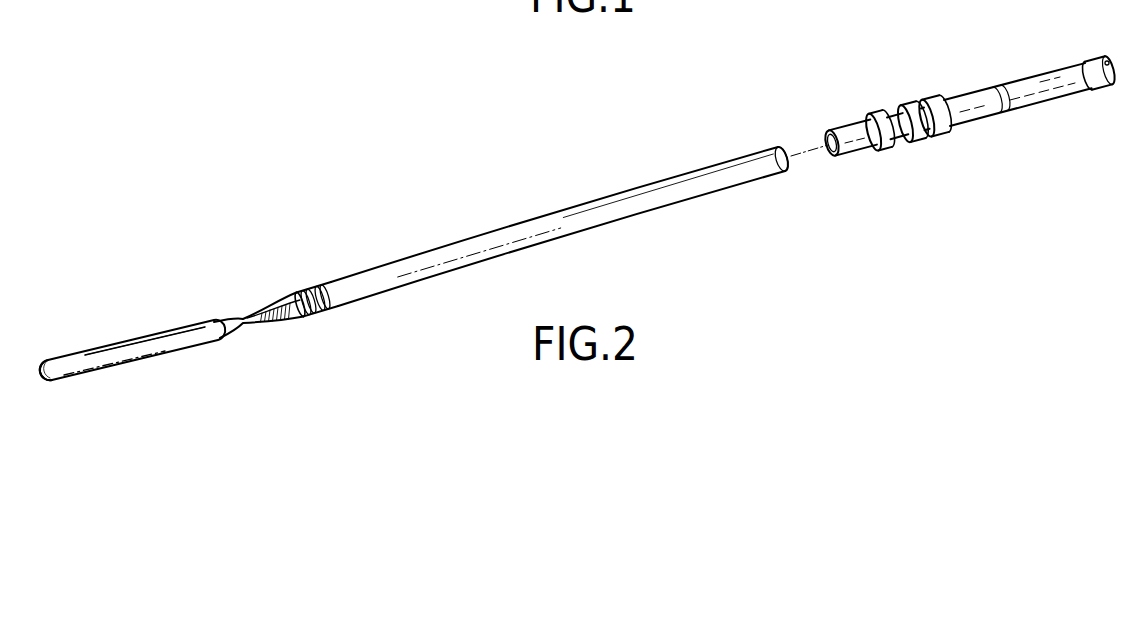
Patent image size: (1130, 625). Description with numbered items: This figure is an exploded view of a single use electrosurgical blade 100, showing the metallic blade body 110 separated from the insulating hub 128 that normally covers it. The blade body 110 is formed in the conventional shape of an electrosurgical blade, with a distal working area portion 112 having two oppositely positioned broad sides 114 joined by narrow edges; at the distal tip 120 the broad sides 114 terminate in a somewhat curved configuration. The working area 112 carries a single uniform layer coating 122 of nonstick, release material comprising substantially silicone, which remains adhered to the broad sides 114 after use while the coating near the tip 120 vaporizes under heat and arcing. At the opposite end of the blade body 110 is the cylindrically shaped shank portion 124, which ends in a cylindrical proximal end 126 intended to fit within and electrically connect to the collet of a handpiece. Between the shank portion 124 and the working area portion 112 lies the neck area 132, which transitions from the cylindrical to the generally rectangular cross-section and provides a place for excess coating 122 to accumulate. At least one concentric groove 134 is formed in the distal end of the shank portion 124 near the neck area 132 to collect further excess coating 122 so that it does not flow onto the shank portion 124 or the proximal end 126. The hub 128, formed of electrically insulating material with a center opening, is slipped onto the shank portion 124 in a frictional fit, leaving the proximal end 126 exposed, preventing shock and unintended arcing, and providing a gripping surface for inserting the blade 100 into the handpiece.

The electrosurgical blade 100 is at (903, 167).
The blade body 110 is at (431, 248).
The working area portion 112 is at (134, 331).
The broad sides 114 is at (63, 361).
The tip 120 is at (50, 372).
The coating 122 is at (150, 355).
The shank portion 124 is at (557, 226).
The proximal end 126 is at (772, 161).
The hub 128 is at (968, 89).
The neck area 132 is at (242, 310).
The concentric groove 134 is at (324, 310).